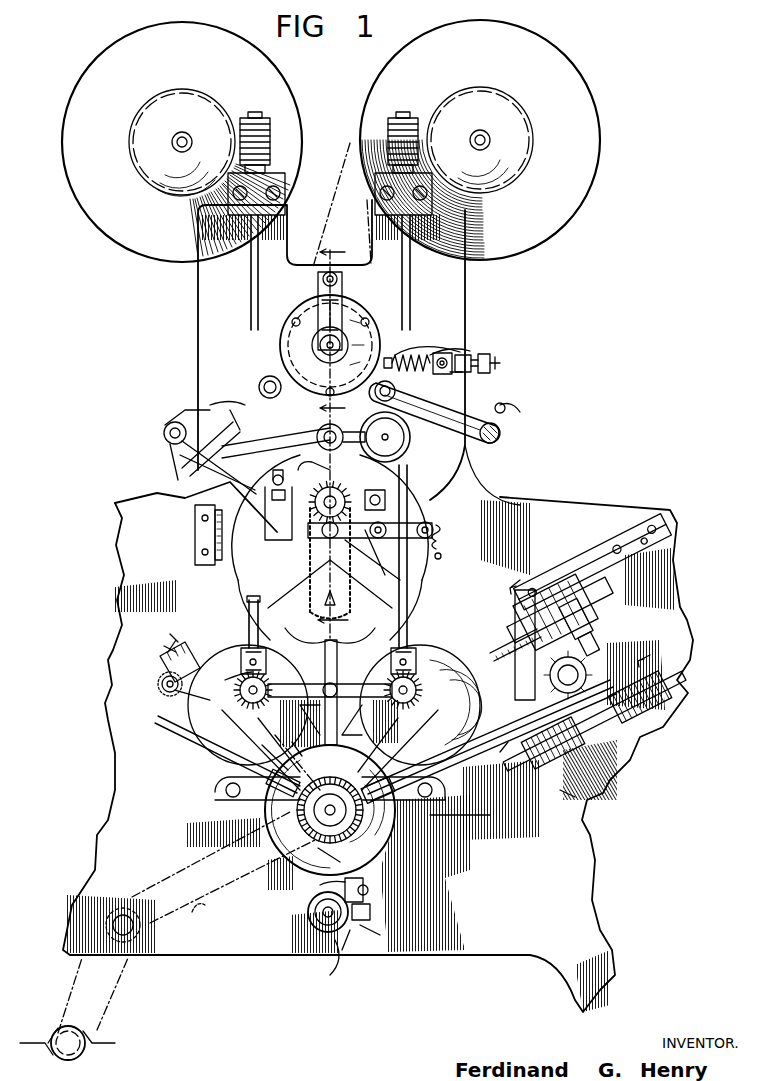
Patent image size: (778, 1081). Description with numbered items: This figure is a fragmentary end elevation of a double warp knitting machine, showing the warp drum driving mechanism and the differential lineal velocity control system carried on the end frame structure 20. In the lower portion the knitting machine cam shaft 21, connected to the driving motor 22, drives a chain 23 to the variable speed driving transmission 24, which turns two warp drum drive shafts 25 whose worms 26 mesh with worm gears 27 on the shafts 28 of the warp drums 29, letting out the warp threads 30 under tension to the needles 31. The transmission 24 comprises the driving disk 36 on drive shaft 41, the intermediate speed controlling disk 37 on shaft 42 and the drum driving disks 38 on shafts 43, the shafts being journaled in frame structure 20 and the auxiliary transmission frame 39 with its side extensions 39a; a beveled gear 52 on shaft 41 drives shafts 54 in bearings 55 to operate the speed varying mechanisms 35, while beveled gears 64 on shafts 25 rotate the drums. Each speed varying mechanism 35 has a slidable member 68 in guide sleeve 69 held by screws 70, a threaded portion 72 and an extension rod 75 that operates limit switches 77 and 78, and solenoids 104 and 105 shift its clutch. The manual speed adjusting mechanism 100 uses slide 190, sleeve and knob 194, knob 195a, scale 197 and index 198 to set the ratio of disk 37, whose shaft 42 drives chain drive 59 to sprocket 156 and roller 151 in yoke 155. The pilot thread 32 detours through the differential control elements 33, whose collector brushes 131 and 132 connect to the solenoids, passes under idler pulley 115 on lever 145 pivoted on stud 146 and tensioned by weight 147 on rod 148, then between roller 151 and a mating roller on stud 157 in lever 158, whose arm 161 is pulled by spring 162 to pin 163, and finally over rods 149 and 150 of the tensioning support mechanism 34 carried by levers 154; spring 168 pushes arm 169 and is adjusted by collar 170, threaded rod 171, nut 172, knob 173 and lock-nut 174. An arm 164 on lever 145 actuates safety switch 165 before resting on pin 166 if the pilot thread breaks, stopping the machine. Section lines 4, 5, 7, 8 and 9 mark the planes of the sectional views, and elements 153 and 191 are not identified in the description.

The section line 4 is at (505, 742).
The section line 5 is at (578, 613).
The section line 7 is at (385, 917).
The section line 8 is at (318, 770).
The section line 9 is at (342, 441).
The knitting machine end frame structure 20 is at (110, 755).
The knitting machine cam shaft 21 is at (140, 918).
The knitting machine driving motor 22 is at (85, 1060).
The driving chain 23 is at (186, 922).
The variable speed driving transmission 24 is at (270, 806).
The warp drum drive shafts 25 is at (248, 620).
The worms 26 is at (268, 118).
The worm gears 27 is at (205, 92).
The warp drum shafts 28 is at (180, 136).
The multiple thread warp drums 29 is at (62, 95).
The warp threads 30 is at (365, 205).
The needles 31 is at (330, 590).
The pilot thread 32 is at (350, 143).
The differential lineal velocity control elements 33 is at (305, 303).
The tensioning support mechanism 34 is at (140, 457).
The speed varying mechanisms 35 is at (146, 639).
The driving disk 36 is at (385, 838).
The intermediate speed controlling disk 37 is at (270, 762).
The drum driving disks 38 is at (224, 666).
The auxiliary transmission frame 39 is at (345, 670).
The side extensions 39a is at (190, 745).
The drive shaft 41 is at (312, 815).
The intermediate disk shaft 42 is at (340, 710).
The drum driving disk shafts 43 is at (245, 735).
The beveled gear 52 is at (327, 873).
The shafts 54 is at (195, 703).
The bearings 55 is at (475, 817).
The chain drive 59 is at (308, 598).
The beveled gears 64 is at (238, 676).
The elongated slidable member 68 is at (520, 640).
The guide sleeve member 69 is at (165, 670).
The screws 70 is at (158, 685).
The threaded portion 72 is at (160, 656).
The extension rod 75 is at (612, 620).
The limit switch 77 is at (630, 525).
The limit switch 78 is at (545, 590).
The manual speed adjusting mechanism 100 is at (305, 940).
The solenoid 104 is at (570, 800).
The solenoid 105 is at (670, 712).
The idler pulley 115 is at (318, 428).
The collector brush 131 is at (312, 342).
The collector brush 132 is at (342, 300).
The lever 145 is at (228, 428).
The stud 146 is at (182, 472).
The weight 147 is at (382, 448).
The rod 148 is at (330, 490).
The rod 149 is at (259, 384).
The rod 150 is at (500, 443).
The roller 151 is at (290, 580).
The link 153 is at (372, 556).
The levers 154 is at (190, 416).
The yoke 155 is at (385, 500).
The sprocket 156 is at (470, 480).
The stud 157 is at (330, 520).
The lever 158 is at (350, 600).
The arm 161 is at (432, 530).
The spring 162 is at (440, 540).
The pin 163 is at (441, 557).
The arm 164 is at (230, 484).
The switch 165 is at (195, 532).
The pin 166 is at (278, 497).
The spring 168 is at (470, 300).
The arm 169 is at (398, 352).
The abutment collar 170 is at (440, 354).
The threaded rod 171 is at (462, 355).
The nut 172 is at (452, 355).
The knob 173 is at (490, 362).
The lock-nut 174 is at (500, 365).
The slide 190 is at (372, 888).
The pin 191 is at (340, 882).
The sleeve and knob 194 is at (345, 965).
The knob 195a is at (300, 922).
The scale 197 is at (372, 915).
The index 198 is at (352, 930).